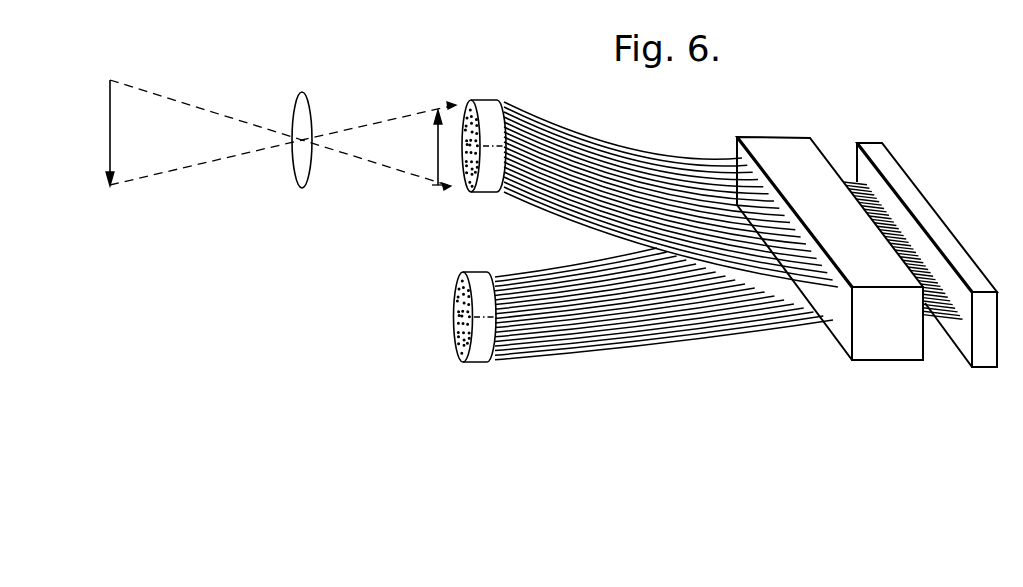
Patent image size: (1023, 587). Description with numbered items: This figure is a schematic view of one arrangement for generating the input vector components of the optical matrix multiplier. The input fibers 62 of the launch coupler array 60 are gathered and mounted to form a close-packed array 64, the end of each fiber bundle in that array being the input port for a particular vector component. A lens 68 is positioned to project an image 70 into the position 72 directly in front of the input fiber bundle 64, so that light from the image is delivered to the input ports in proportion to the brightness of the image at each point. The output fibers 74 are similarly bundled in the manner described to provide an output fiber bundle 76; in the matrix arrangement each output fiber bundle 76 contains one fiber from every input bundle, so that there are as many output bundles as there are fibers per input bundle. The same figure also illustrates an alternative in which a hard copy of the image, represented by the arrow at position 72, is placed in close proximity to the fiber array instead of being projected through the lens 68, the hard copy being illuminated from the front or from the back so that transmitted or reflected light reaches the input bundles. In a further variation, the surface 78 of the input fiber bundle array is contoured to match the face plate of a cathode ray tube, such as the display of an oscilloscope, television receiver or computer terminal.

The launch coupler array 60 is at (830, 347).
The input fibers 62 is at (628, 148).
The close-packed array 64 is at (460, 138).
The lens 68 is at (310, 105).
The image 70 is at (112, 147).
The position of the image 72 is at (438, 150).
The output fibers 74 is at (680, 328).
The output fiber bundle 76 is at (458, 326).
The surface of the input fiber bundle array 78 is at (468, 164).